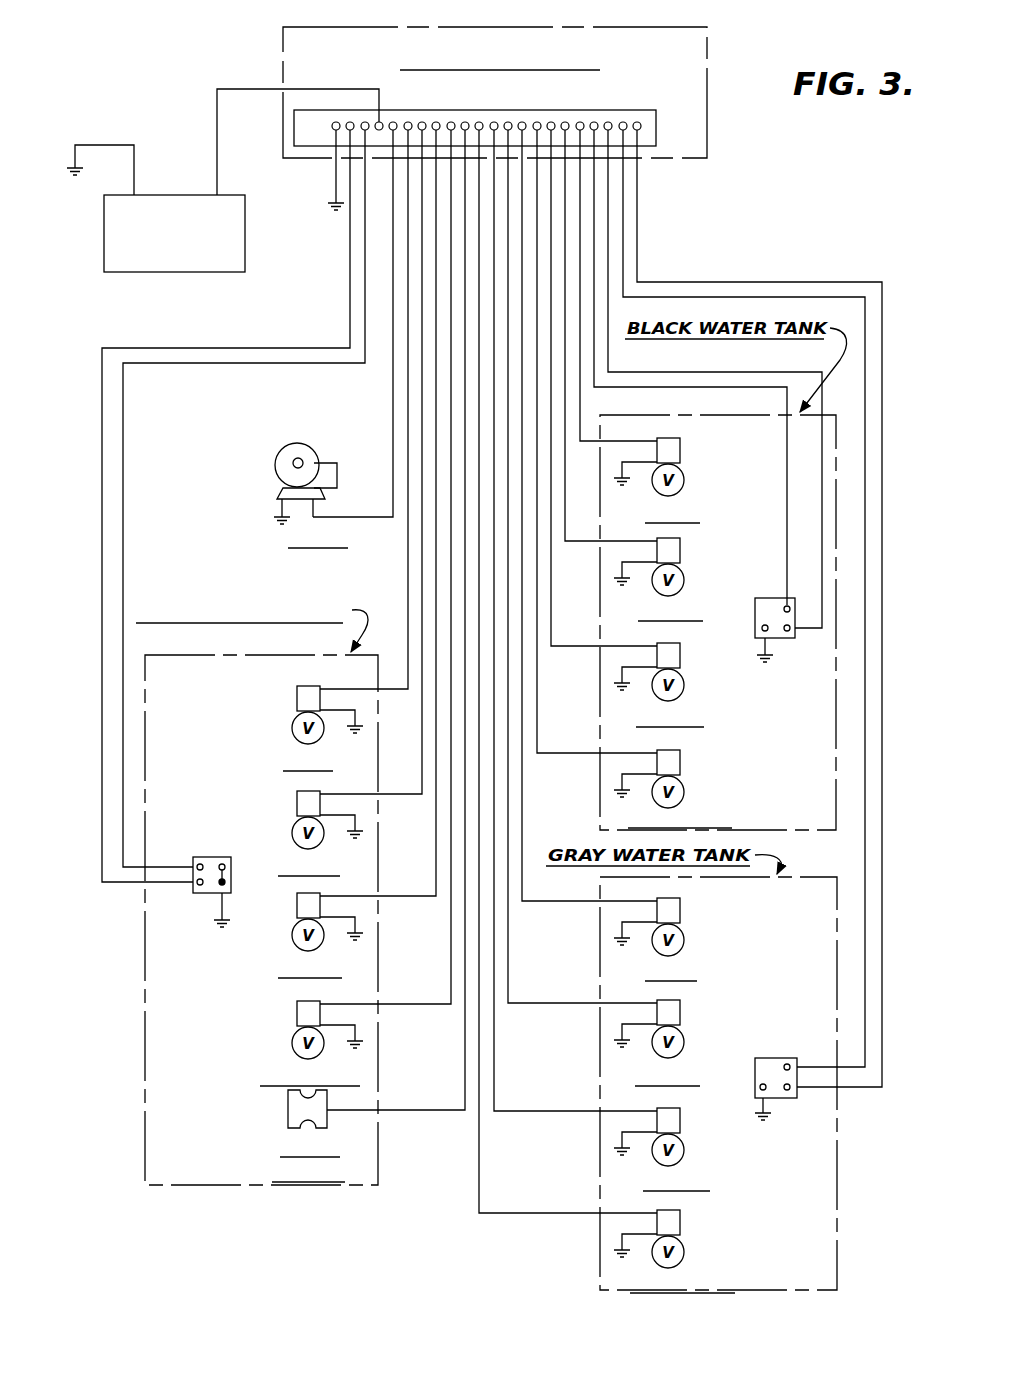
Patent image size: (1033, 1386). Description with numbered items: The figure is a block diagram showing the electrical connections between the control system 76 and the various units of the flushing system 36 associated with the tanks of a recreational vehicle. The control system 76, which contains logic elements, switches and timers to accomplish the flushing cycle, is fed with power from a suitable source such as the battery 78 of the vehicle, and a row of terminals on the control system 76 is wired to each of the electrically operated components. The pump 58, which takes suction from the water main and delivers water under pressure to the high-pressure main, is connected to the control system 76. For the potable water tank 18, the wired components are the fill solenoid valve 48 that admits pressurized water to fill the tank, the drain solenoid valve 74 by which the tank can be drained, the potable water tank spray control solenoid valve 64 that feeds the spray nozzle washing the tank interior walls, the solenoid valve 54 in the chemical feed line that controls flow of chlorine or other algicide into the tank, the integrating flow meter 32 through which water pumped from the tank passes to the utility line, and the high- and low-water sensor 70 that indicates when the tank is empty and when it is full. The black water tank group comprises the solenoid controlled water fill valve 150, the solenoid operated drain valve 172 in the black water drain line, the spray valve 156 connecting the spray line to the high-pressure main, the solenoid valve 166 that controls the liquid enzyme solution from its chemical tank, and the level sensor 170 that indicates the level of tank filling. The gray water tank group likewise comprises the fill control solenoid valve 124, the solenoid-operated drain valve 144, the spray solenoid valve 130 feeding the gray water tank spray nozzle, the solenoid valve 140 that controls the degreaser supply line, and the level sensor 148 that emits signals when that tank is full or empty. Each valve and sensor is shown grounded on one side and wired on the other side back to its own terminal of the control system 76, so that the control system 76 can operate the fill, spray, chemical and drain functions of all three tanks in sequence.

The control system 76 is at (708, 62).
The flushing system 36 is at (768, 214).
The battery 78 is at (182, 275).
The pump 58 is at (310, 447).
The fill solenoid valve 48 is at (295, 725).
The solenoid valve 74 is at (295, 828).
The high- and low-water sensor 70 is at (212, 857).
The potable water tank spray control solenoid valve 64 is at (290, 935).
The solenoid valve 54 is at (292, 1043).
The integrating flow meter 32 is at (288, 1110).
The potable water tank 18 is at (143, 993).
The solenoid controlled water fill valve 150 is at (684, 475).
The solenoid operated drain valve 172 is at (685, 572).
The level sensor 170 is at (790, 640).
The spray valve 156 is at (687, 685).
The solenoid valve 166 is at (685, 788).
The fill control solenoid valve 124 is at (686, 940).
The solenoid-operated drain valve 144 is at (685, 1038).
The level sensor 148 is at (777, 1058).
The spray solenoid valve 130 is at (686, 1150).
The solenoid valve 140 is at (685, 1245).